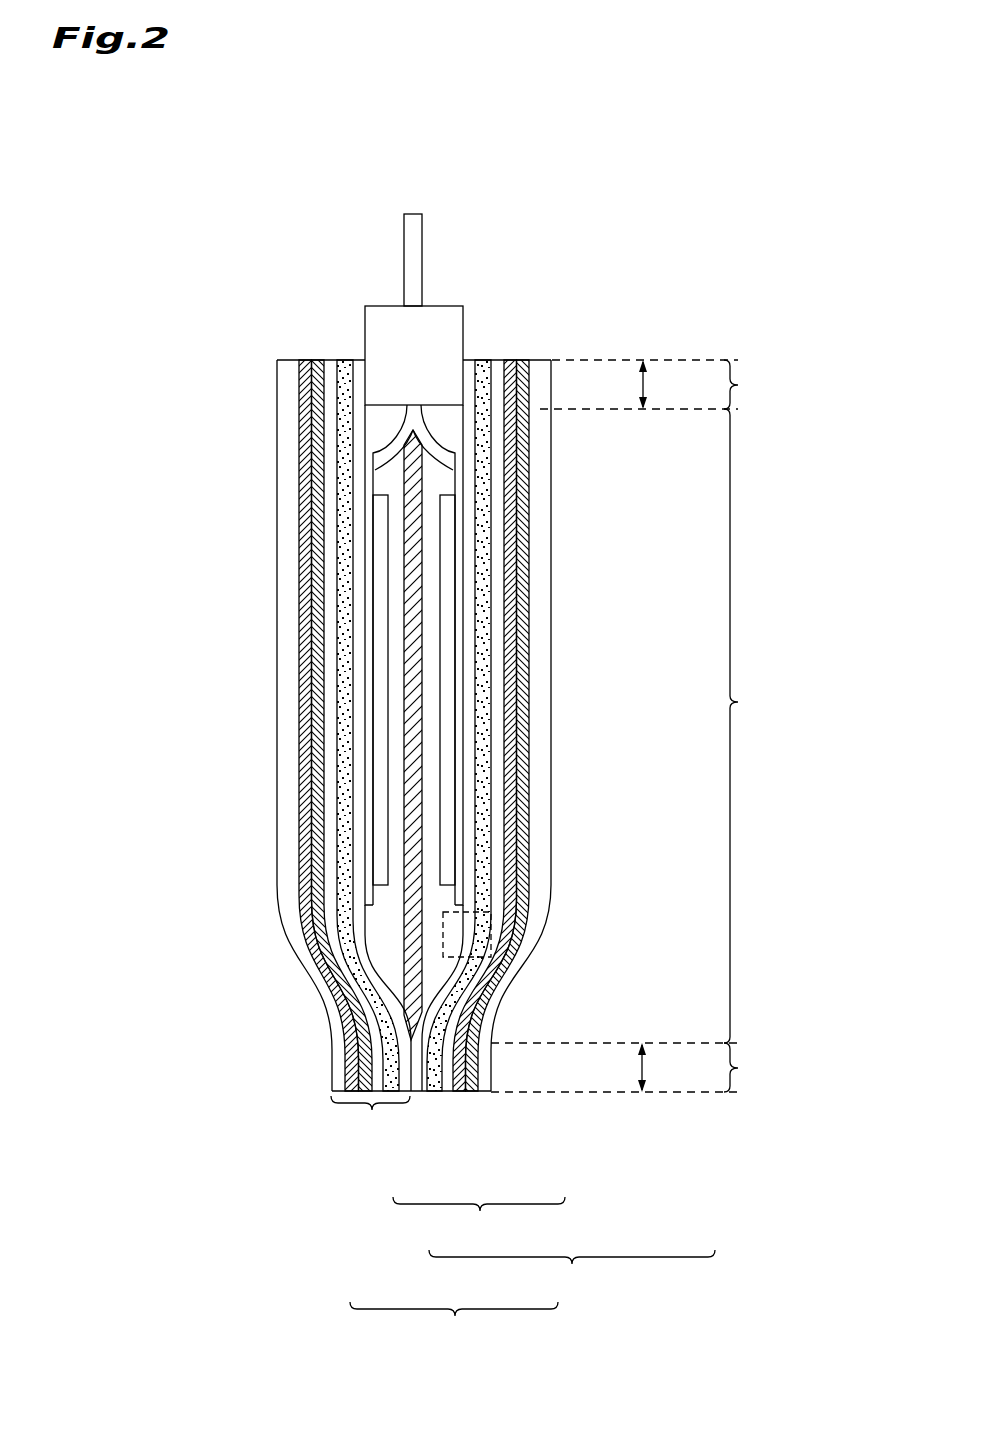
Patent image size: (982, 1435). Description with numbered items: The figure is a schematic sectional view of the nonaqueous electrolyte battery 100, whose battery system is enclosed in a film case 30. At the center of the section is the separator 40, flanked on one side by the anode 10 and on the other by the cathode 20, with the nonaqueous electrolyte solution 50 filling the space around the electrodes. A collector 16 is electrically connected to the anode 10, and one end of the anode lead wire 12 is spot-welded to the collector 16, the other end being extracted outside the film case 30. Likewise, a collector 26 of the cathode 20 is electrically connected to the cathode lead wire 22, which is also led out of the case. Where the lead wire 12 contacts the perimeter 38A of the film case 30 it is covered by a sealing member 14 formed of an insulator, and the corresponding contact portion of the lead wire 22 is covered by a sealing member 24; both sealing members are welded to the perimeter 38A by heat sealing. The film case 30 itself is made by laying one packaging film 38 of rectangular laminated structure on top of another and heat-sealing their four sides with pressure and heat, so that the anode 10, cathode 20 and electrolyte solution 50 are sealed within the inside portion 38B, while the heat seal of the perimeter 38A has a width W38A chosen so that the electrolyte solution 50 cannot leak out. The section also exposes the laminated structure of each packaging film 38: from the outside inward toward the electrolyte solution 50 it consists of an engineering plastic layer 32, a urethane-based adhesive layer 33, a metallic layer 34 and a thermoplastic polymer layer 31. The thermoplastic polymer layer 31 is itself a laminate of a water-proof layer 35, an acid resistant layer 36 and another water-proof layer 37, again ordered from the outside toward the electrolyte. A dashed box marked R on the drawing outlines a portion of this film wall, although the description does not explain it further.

The nonaqueous electrolyte battery 100 is at (455, 728).
The anode 10 is at (380, 556).
The anode lead wire 12 is at (388, 443).
The sealing member 14 is at (350, 328).
The collector 16 is at (368, 630).
The cathode 20 is at (448, 556).
The cathode lead wire 22 is at (440, 443).
The sealing member 24 is at (365, 306).
The collector 26 is at (460, 630).
The film case 30 is at (454, 1327).
The thermoplastic polymer layer 31 is at (479, 1224).
The engineering plastic layer 32 is at (486, 1091).
The urethane-based adhesive layer 33 is at (467, 1091).
The metallic layer 34 is at (458, 1091).
The water-proof layer 35 is at (448, 1091).
The acid resistant layer 36 is at (433, 1091).
The water-proof layer 37 is at (417, 1091).
The packaging film 38 is at (372, 1110).
The perimeter 38A is at (762, 726).
The inside portion 38B is at (762, 726).
The width of the heat seal W38A is at (647, 380).
The separator 40 is at (412, 778).
The nonaqueous electrolyte solution 50 is at (395, 720).
The region R is at (491, 920).